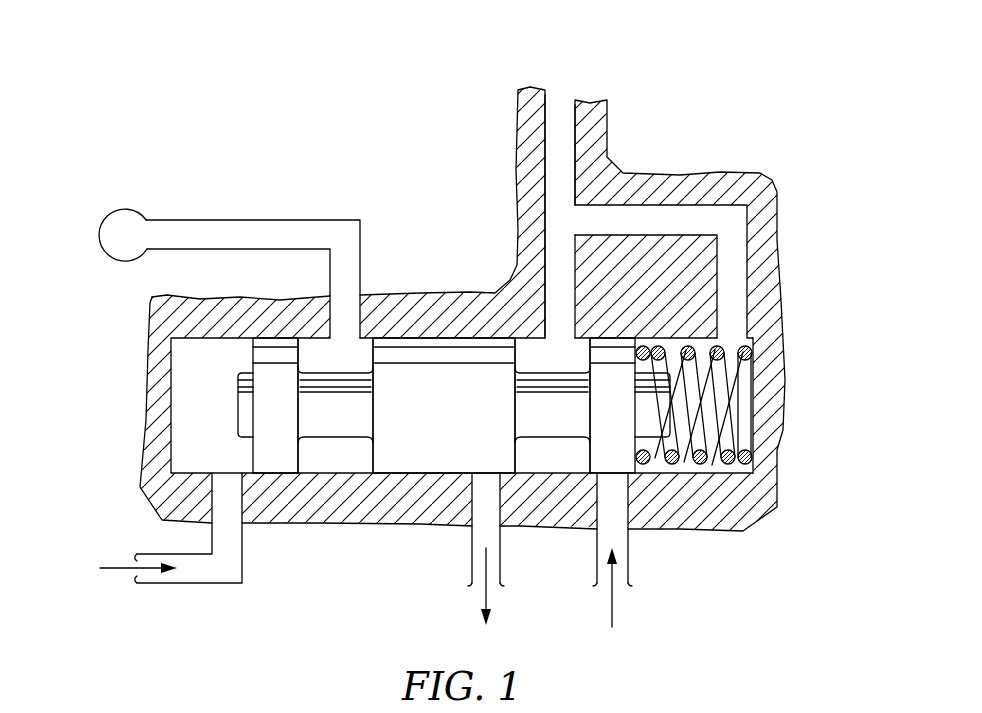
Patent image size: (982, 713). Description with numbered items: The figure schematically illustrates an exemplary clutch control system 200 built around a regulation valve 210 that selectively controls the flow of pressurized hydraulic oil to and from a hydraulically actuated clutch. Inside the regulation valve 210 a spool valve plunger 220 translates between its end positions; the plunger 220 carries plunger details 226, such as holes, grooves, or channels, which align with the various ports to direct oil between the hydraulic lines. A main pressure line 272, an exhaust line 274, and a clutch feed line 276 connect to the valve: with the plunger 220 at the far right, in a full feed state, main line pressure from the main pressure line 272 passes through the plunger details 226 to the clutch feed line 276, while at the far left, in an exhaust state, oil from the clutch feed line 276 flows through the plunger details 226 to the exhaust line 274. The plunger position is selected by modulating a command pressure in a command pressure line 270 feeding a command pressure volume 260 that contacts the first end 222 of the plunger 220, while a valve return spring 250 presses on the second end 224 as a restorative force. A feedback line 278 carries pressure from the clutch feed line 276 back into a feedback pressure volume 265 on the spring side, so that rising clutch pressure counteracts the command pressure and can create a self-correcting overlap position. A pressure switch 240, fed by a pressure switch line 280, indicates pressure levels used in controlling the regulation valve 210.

The clutch control system 200 is at (159, 84).
The regulation valve 210 is at (448, 338).
The spool valve plunger 220 is at (413, 372).
The first end 222 is at (250, 405).
The second end 224 is at (652, 445).
The plunger details 226 is at (325, 375).
The pressure switch 240 is at (123, 212).
The valve return spring 250 is at (723, 398).
The command pressure volume 260 is at (187, 418).
The feedback pressure volume 265 is at (710, 428).
The command pressure line 270 is at (205, 568).
The main pressure line 272 is at (627, 548).
The exhaust line 274 is at (480, 537).
The clutch feed line 276 is at (560, 110).
The feedback line 278 is at (730, 293).
The pressure switch line 280 is at (230, 233).